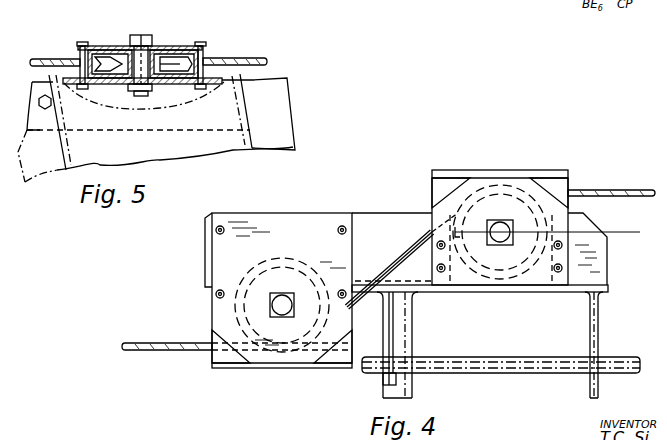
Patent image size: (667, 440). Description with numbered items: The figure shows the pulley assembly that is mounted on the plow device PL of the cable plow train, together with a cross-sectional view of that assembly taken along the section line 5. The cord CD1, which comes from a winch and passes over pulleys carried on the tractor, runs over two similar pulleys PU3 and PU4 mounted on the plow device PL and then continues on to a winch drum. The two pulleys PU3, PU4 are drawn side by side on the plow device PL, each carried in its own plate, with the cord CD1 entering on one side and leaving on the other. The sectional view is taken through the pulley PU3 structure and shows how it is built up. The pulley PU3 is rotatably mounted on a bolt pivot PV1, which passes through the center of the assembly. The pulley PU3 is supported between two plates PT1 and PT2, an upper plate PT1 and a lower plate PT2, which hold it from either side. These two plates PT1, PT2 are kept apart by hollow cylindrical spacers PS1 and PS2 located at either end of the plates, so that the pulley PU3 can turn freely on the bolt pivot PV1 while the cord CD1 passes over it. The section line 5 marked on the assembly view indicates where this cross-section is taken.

In FIG. 5, the cord CD1 is at (35, 58).
In FIG. 4, the cord CD1 is at (148, 342).
In FIG. 5, the hollow cylindrical spacer PS1 is at (69, 55).
In FIG. 5, the hollow cylindrical spacer PS2 is at (208, 53).
In FIG. 5, the pulley PU3 is at (118, 57).
In FIG. 4, the pulley PU3 is at (498, 278).
In FIG. 4, the pulley PU4 is at (293, 268).
In FIG. 5, the bolt pivot PV1 is at (141, 38).
In FIG. 4, the bolt pivot PV1 is at (506, 225).
In FIG. 5, the plate PT1 is at (168, 47).
In FIG. 4, the plate PT1 is at (447, 183).
In FIG. 5, the plate PT2 is at (67, 82).
In FIG. 4, the plow device PL is at (501, 353).
In FIG. 4, the section line 5 is at (403, 243).